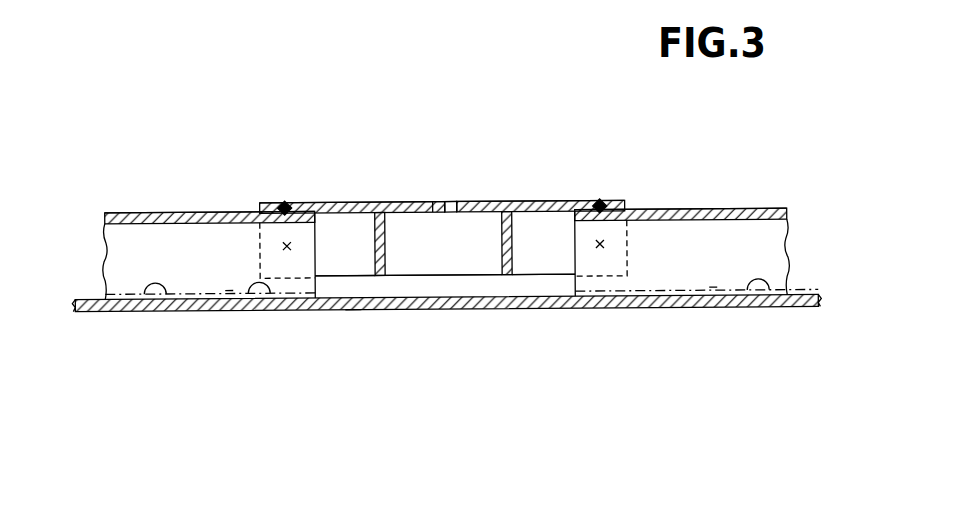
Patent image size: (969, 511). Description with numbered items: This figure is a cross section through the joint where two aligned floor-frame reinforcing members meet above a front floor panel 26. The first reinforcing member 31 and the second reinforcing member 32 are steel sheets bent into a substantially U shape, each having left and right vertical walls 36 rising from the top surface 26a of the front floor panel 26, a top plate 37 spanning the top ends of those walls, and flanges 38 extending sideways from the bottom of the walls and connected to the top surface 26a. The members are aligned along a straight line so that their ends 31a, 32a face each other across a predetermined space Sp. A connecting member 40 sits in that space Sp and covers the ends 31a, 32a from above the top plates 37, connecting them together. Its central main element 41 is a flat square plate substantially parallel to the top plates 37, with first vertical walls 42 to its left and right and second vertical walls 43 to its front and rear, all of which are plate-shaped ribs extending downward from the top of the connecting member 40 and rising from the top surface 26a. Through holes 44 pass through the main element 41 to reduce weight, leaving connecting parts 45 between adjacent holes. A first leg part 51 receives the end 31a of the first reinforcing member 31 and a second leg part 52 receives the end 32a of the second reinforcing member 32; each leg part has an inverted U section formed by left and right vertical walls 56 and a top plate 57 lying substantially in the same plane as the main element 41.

The front floor panel 26 is at (88, 316).
The top surface of front floor panel 26a is at (162, 310).
The first reinforcing member 31 is at (142, 210).
The end of first reinforcing member 31a is at (262, 232).
The second reinforcing member 32 is at (745, 209).
The end of second reinforcing member 32a is at (640, 228).
The vertical wall 36 is at (229, 290).
The top plate 37 is at (210, 210).
The flange 38 is at (265, 308).
The connecting member 40 is at (530, 188).
The main element 41 is at (500, 198).
The first vertical wall 42 is at (440, 263).
The second vertical wall 43 is at (392, 262).
The through hole 44 is at (395, 201).
The connecting part 45 is at (438, 201).
The first leg part 51 is at (297, 200).
The second leg part 52 is at (560, 198).
The vertical wall of leg part 56 is at (336, 268).
The top plate of leg part 57 is at (323, 201).
The space Sp is at (353, 300).